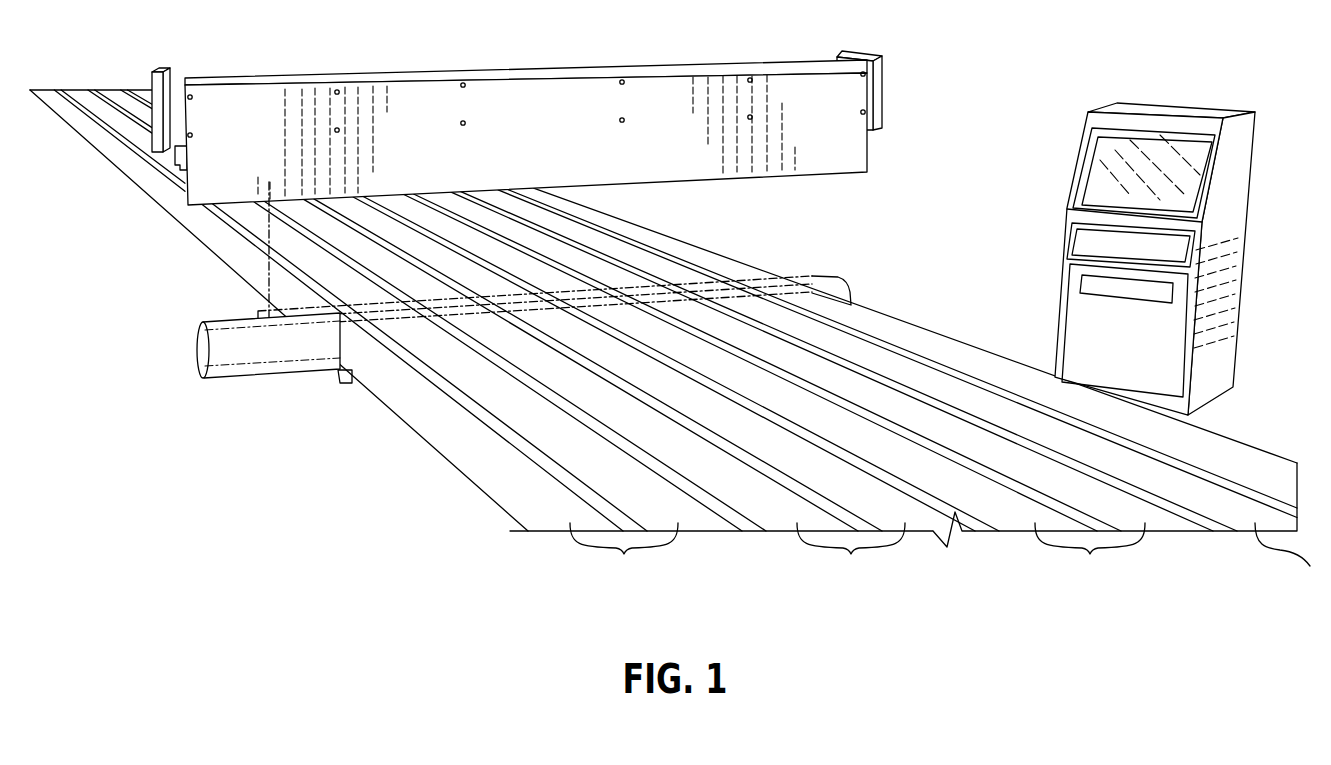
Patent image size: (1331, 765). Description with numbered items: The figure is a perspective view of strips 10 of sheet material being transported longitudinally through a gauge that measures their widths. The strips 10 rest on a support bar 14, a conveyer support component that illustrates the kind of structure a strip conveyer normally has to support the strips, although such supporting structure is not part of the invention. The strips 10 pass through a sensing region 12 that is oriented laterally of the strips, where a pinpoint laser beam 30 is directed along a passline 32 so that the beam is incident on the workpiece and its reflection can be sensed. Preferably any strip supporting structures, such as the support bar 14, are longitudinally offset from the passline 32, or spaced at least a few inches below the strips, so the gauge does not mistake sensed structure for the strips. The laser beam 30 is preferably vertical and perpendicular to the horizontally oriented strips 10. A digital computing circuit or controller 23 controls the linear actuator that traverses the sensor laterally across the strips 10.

The strips 10 is at (1300, 418).
The sensing region 12 is at (533, 310).
The support bar 14 is at (222, 357).
The controller 23 is at (1098, 137).
The laser beam 30 is at (268, 277).
The passline 32 is at (336, 312).